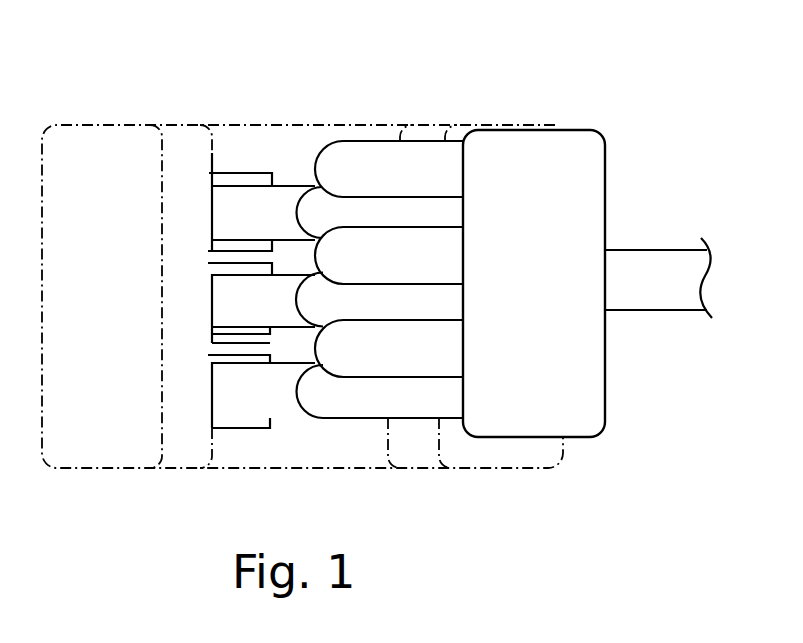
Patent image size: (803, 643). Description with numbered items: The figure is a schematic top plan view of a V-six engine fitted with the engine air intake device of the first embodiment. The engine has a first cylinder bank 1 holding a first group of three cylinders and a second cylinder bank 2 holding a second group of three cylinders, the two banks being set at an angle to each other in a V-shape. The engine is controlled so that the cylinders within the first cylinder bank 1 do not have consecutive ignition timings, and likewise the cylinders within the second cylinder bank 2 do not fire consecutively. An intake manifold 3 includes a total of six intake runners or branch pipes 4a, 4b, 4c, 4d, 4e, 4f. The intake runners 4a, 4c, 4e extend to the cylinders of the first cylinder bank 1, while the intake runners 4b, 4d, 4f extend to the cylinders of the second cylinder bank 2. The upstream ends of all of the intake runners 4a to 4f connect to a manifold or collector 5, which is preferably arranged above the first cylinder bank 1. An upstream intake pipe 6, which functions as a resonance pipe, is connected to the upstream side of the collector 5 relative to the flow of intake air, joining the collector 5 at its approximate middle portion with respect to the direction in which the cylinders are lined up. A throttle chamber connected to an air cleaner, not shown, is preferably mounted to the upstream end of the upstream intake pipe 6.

The first cylinder bank 1 is at (488, 471).
The second cylinder bank 2 is at (103, 469).
The intake manifold 3 is at (501, 115).
The intake runner 4a is at (389, 169).
The intake runner 4b is at (321, 212).
The intake runner 4c is at (389, 255).
The intake runner 4d is at (322, 300).
The intake runner 4e is at (389, 348).
The intake runner 4f is at (380, 391).
The collector 5 is at (534, 283).
The upstream intake pipe 6 is at (658, 278).